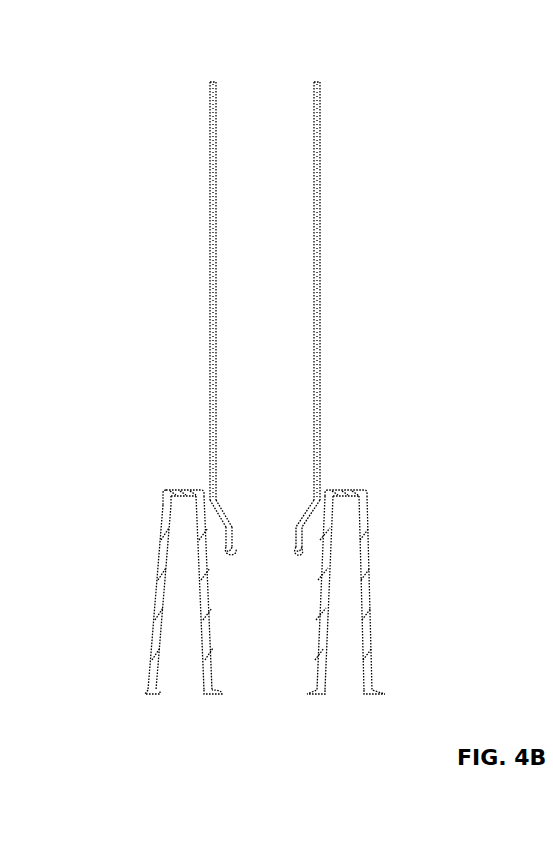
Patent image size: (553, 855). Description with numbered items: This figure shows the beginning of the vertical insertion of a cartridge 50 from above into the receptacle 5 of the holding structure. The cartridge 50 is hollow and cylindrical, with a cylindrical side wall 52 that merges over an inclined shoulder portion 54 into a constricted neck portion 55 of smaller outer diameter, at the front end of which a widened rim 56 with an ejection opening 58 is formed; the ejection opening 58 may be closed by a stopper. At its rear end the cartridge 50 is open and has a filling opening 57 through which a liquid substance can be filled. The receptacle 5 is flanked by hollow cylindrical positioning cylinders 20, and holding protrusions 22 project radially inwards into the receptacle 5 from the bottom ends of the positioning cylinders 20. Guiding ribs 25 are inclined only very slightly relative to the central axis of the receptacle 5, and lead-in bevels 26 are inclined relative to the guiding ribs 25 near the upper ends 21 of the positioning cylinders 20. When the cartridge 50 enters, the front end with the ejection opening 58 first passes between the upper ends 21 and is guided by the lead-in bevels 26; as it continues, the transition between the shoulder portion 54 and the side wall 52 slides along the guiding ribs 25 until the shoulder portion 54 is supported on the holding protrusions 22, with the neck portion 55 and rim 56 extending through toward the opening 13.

The receptacle 5 is at (298, 667).
The opening 13 is at (262, 685).
The positioning cylinder 20 is at (163, 591).
The upper end of positioning pin 21 is at (183, 490).
The holding protrusion 22 is at (155, 688).
The guiding rib 25 is at (167, 545).
The lead-in bevel of guiding rib 26 is at (162, 503).
The cartridge 50 is at (355, 173).
The cylindrical side wall 52 is at (315, 255).
The shoulder portion 54 is at (222, 515).
The constricted neck portion 55 is at (236, 542).
The widened rim 56 is at (235, 557).
The filling opening 57 is at (277, 99).
The ejection opening 58 is at (276, 538).